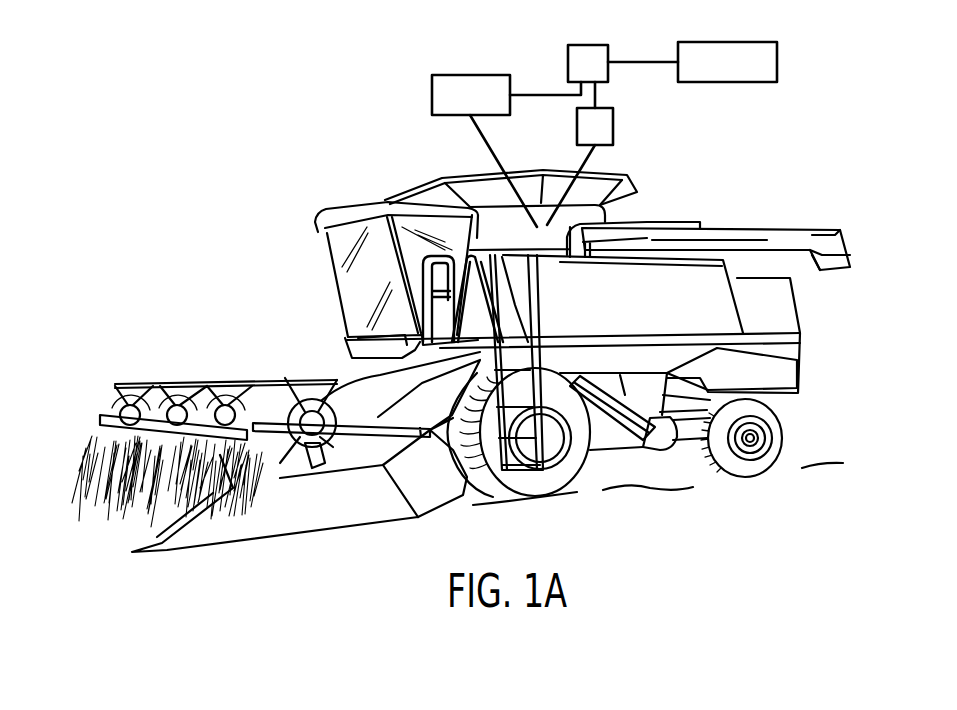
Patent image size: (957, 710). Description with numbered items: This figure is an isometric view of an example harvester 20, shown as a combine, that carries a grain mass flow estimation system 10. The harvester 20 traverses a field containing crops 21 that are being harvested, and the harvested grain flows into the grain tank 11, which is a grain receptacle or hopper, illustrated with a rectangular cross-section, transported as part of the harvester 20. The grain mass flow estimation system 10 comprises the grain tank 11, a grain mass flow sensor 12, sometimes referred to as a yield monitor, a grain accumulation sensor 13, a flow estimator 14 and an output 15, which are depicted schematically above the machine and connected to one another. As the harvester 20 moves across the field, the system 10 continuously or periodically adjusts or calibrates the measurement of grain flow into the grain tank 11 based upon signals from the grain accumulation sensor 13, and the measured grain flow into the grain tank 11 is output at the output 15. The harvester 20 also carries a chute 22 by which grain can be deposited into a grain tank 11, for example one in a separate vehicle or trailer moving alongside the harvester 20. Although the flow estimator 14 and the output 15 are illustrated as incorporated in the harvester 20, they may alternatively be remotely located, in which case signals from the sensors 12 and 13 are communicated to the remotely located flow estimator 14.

The grain mass flow estimation system 10 is at (635, 182).
The grain tank 11 is at (395, 197).
The grain mass flow sensor 12 is at (470, 75).
The grain accumulation sensor 13 is at (613, 128).
The flow estimator 14 is at (568, 62).
The output 15 is at (777, 62).
The harvester 20 is at (340, 128).
The crops 21 is at (85, 438).
The chute 22 is at (810, 228).